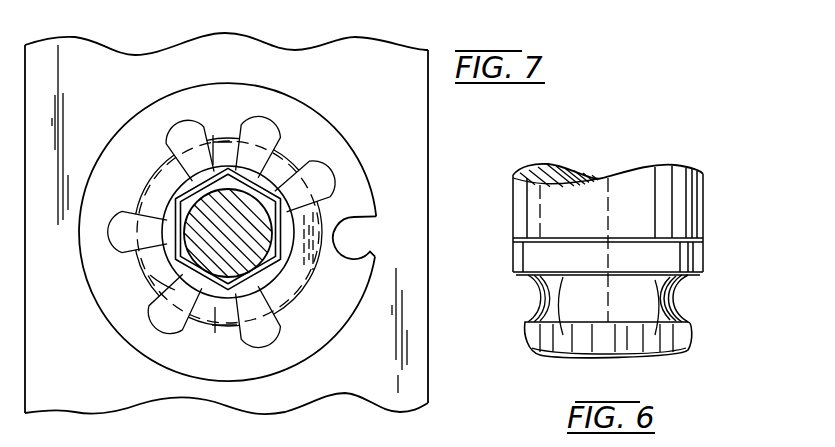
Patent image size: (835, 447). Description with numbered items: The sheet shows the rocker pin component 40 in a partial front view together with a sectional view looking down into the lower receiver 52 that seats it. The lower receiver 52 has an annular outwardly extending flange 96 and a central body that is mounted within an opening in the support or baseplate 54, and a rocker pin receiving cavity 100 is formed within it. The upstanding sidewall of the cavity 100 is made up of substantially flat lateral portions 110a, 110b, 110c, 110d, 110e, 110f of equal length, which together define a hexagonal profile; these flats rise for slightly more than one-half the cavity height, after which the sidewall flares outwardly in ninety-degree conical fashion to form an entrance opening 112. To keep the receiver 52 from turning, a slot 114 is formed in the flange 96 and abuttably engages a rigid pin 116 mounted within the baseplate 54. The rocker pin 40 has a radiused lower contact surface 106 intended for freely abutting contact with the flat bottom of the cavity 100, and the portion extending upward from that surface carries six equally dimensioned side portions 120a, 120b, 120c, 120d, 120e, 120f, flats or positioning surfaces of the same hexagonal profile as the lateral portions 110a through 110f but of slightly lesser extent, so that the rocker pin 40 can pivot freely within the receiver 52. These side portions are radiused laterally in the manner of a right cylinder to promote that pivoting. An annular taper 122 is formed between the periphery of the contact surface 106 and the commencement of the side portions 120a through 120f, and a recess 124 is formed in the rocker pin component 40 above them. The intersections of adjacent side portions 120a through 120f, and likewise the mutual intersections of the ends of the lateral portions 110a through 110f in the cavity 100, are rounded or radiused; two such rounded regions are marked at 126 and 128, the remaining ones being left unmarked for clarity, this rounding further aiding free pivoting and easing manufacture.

In FIG. 7, the rocker pin component 40 is at (234, 205).
In FIG. 6, the rocker pin component 40 is at (675, 152).
In FIG. 7, the lower receiver 52 is at (388, 75).
In FIG. 7, the baseplate 54 is at (407, 134).
In FIG. 7, the annular outwardly extending flange 96 is at (372, 203).
In FIG. 7, the rocker pin receiving cavity 100 is at (290, 300).
In FIG. 6, the lower contact surface 106 is at (625, 358).
In FIG. 7, the lateral portion 110a is at (306, 205).
In FIG. 7, the lateral portion 110b is at (268, 172).
In FIG. 7, the lateral portion 110c is at (185, 176).
In FIG. 7, the lateral portion 110d is at (174, 240).
In FIG. 7, the lateral portion 110e is at (180, 283).
In FIG. 7, the lateral portion 110f is at (245, 316).
In FIG. 7, the entrance opening 112 is at (158, 170).
In FIG. 7, the slot 114 is at (372, 221).
In FIG. 7, the rigid pin 116 is at (360, 243).
In FIG. 7, the side portion 120a is at (296, 189).
In FIG. 6, the side portion 120a is at (612, 338).
In FIG. 7, the side portion 120b is at (250, 160).
In FIG. 6, the side portion 120b is at (686, 336).
In FIG. 7, the side portion 120c is at (200, 160).
In FIG. 7, the side portion 120d is at (168, 222).
In FIG. 7, the side portion 120e is at (185, 300).
In FIG. 7, the side portion 120f is at (250, 305).
In FIG. 6, the side portion 120f is at (535, 339).
In FIG. 6, the annular taper 122 is at (540, 355).
In FIG. 6, the recess 124 is at (681, 304).
In FIG. 7, the rounded region 126 is at (305, 268).
In FIG. 6, the rounded region 126 is at (562, 338).
In FIG. 7, the rounded region 128 is at (286, 176).
In FIG. 6, the rounded region 128 is at (655, 325).